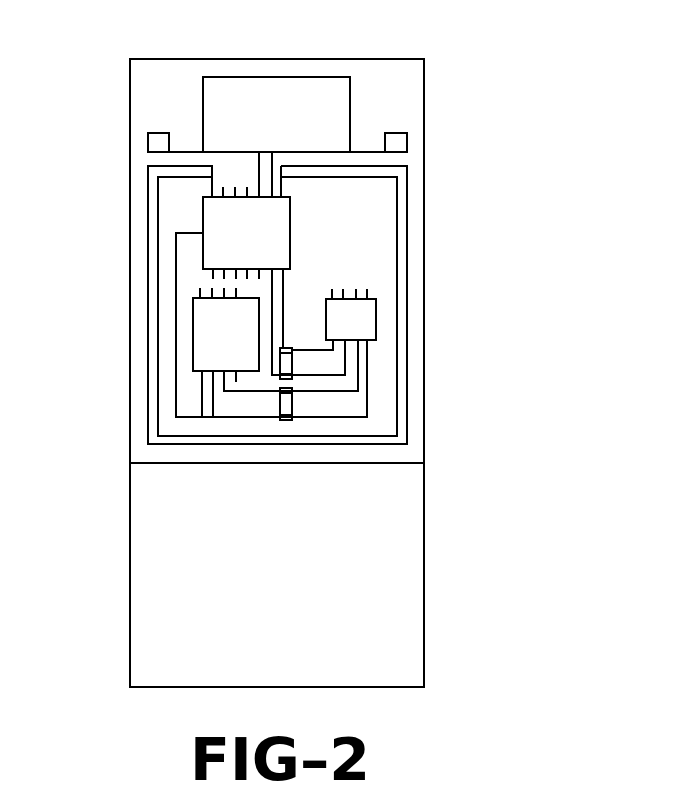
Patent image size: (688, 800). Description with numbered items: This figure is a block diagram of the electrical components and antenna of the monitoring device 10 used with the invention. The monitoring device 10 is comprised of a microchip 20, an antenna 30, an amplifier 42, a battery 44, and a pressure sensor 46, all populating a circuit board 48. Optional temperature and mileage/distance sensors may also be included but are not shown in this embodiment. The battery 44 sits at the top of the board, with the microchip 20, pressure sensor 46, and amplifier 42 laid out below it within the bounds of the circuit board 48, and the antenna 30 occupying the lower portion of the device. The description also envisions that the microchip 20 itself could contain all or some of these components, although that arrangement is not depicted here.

The monitoring device 10 is at (452, 114).
The microchip 20 is at (223, 220).
The antenna 30 is at (185, 573).
The amplifier 42 is at (358, 318).
The battery 44 is at (312, 88).
The pressure sensor 46 is at (213, 332).
The circuit board 48 is at (124, 122).